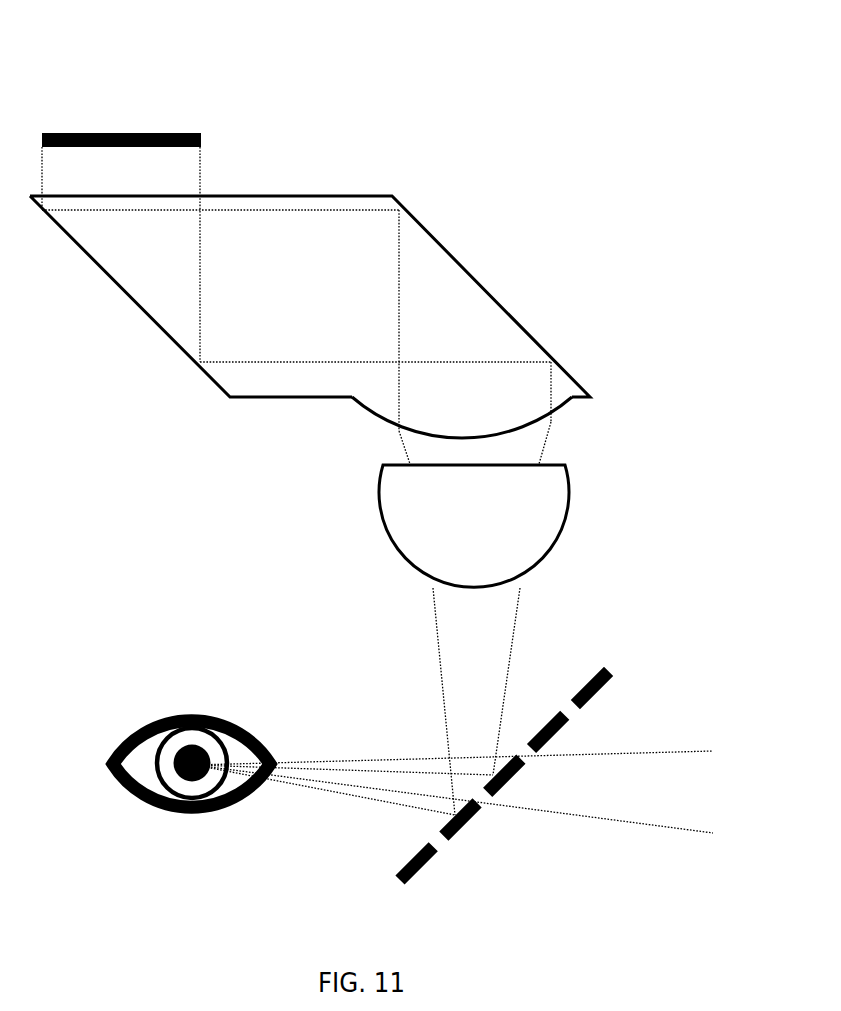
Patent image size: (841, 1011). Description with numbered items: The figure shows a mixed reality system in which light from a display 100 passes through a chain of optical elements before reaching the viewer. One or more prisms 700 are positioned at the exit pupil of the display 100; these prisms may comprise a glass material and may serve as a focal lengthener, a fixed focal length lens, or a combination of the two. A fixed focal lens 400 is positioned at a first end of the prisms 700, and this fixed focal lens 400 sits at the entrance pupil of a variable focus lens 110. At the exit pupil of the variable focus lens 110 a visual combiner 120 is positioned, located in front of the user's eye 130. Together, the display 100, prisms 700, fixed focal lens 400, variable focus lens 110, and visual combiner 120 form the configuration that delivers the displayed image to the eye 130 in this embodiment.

The display 100 is at (107, 132).
The prism 700 is at (437, 297).
The fixed focal lens 400 is at (480, 412).
The variable focus lens 110 is at (437, 517).
The visual combiner 120 is at (472, 822).
The user's eye 130 is at (180, 782).